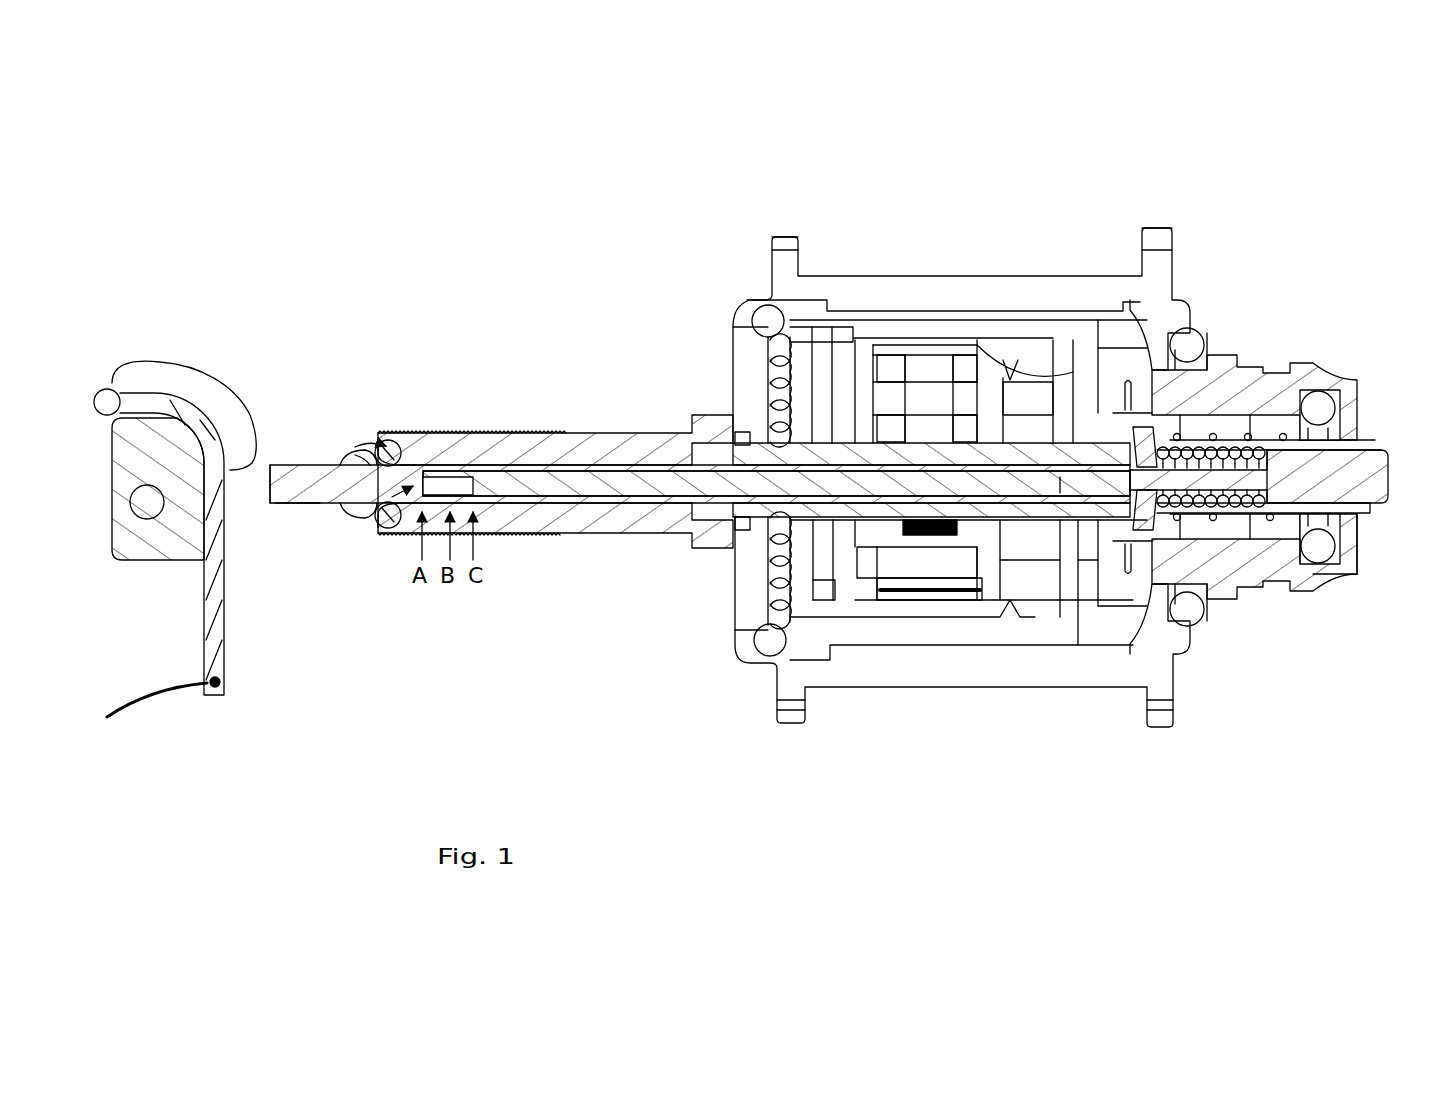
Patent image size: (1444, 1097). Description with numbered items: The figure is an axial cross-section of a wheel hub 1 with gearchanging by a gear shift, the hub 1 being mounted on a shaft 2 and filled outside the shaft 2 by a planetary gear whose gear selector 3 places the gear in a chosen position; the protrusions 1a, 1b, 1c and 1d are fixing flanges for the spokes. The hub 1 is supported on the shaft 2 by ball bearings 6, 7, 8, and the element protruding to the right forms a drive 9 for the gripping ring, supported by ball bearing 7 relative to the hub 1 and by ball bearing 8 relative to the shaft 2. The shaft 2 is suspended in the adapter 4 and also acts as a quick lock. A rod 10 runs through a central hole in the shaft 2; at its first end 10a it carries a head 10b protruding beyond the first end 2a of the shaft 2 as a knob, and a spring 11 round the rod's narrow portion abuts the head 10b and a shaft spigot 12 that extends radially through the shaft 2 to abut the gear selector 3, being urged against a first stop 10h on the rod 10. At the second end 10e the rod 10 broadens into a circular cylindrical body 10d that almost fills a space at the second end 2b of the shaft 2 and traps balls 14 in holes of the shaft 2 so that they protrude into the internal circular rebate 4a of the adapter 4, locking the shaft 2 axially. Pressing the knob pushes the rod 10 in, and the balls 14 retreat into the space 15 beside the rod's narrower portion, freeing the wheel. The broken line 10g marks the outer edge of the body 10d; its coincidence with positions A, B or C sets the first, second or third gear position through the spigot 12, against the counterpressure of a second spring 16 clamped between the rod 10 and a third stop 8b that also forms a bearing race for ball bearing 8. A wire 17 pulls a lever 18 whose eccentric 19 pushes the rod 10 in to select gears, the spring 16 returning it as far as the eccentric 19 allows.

The hub 1 is at (1108, 736).
The fixing flange 1a is at (776, 718).
The fixing flange 1b is at (1178, 722).
The fixing flange 1c is at (772, 243).
The fixing flange 1d is at (1173, 246).
The shaft 2 is at (583, 436).
The first end of the shaft 2a is at (1355, 578).
The second end of the shaft 2b is at (338, 450).
The gear selector 3 is at (1140, 400).
The adapter 4 is at (660, 430).
The internal circular rebate 4a is at (352, 443).
The ball bearing 6 is at (747, 317).
The ball bearing 7 is at (1200, 345).
The ball bearing 8 is at (1330, 396).
The third stop 8b is at (1297, 533).
The drive 9 is at (1330, 576).
The rod 10 is at (630, 483).
The first end of the rod 10a is at (1391, 487).
The head 10b is at (1373, 513).
The circular cylindrical body 10d is at (293, 505).
The second end of the rod 10e is at (268, 490).
The line marking the outermost edge of the body 10g is at (345, 507).
The first stop 10h is at (1070, 492).
The spring 11 is at (1213, 523).
The shaft spigot 12 is at (1160, 530).
The ball 14 is at (380, 528).
The space 15 is at (432, 433).
The second spring 16 is at (1252, 440).
The wire 17 is at (167, 697).
The lever 18 is at (162, 443).
The eccentric 19 is at (235, 407).